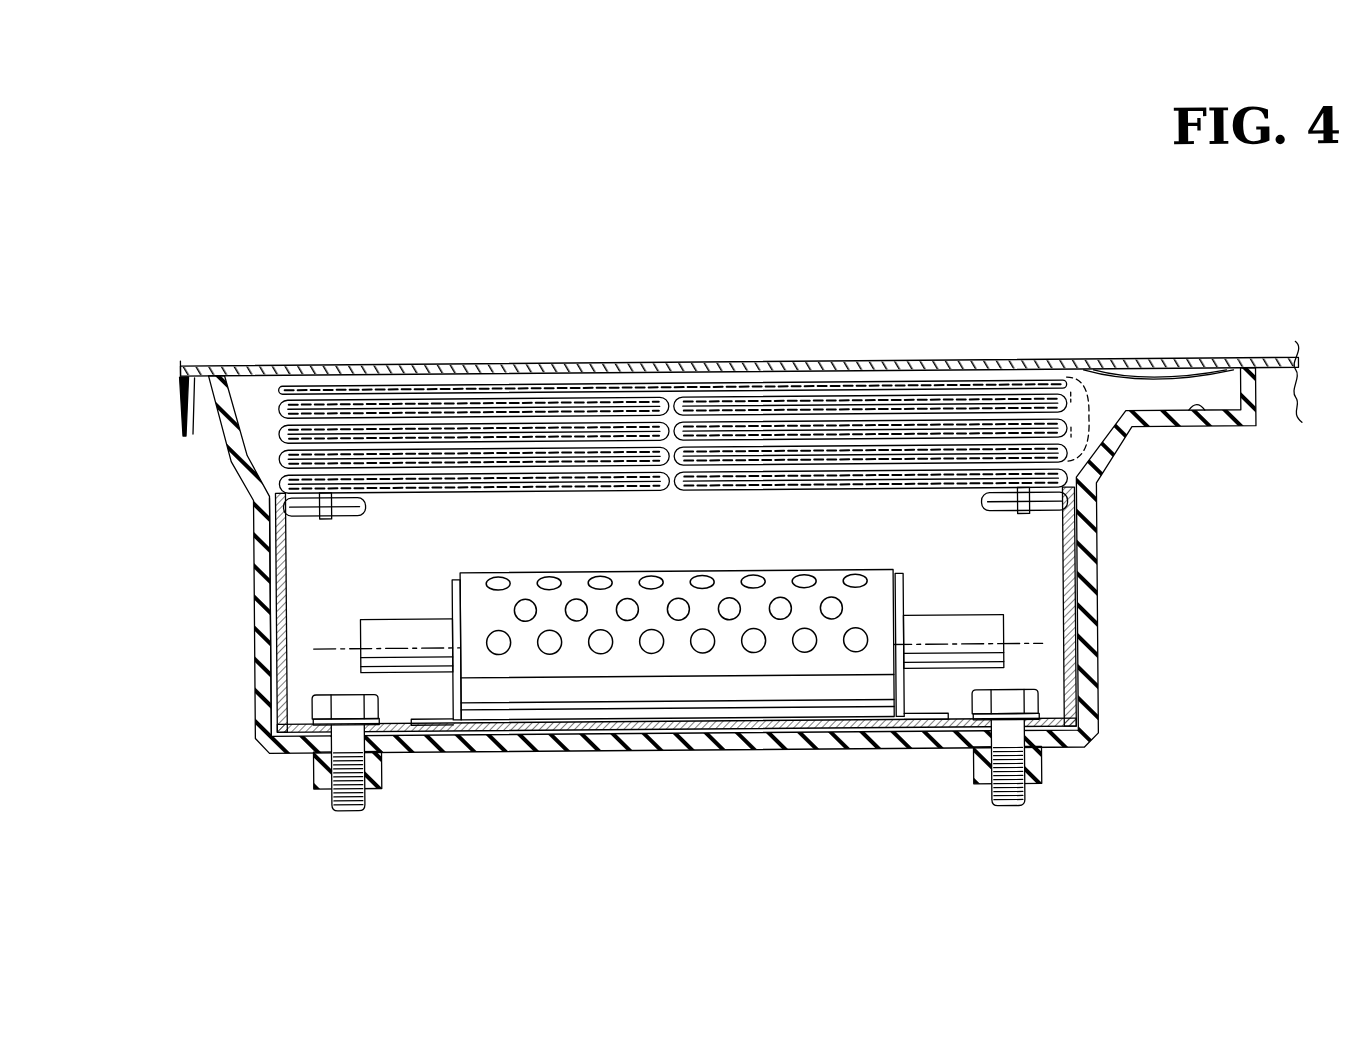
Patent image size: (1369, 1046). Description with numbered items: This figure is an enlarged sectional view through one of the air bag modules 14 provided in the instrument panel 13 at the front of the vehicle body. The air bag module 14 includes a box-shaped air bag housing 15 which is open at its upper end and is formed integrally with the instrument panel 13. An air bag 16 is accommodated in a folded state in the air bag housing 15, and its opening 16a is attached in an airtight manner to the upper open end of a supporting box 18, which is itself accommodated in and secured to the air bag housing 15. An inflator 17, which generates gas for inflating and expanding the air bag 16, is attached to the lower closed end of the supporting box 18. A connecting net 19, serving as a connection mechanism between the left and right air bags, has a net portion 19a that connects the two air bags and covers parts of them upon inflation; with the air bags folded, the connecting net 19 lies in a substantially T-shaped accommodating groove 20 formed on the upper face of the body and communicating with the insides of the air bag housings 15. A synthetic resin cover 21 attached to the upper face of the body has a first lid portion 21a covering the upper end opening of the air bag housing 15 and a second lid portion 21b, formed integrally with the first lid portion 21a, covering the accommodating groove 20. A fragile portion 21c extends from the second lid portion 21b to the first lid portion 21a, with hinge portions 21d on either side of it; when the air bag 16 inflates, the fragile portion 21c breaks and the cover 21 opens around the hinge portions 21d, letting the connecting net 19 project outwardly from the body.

The instrument panel 13 is at (198, 383).
The air bag module 14 is at (240, 581).
The air bag housing 15 is at (1092, 552).
The air bag 16 is at (533, 367).
The opening 16a is at (1073, 548).
The inflator 17 is at (740, 580).
The supporting box 18 is at (1075, 648).
The connecting net 19 is at (1142, 402).
The net portion 19a is at (890, 400).
The accommodating groove 20 is at (1215, 415).
The cover 21 is at (585, 350).
The first lid portion 21a is at (608, 363).
The second lid portion 21b is at (1100, 358).
The fragile portion 21c is at (1165, 370).
The hinge portion 21d is at (1065, 358).